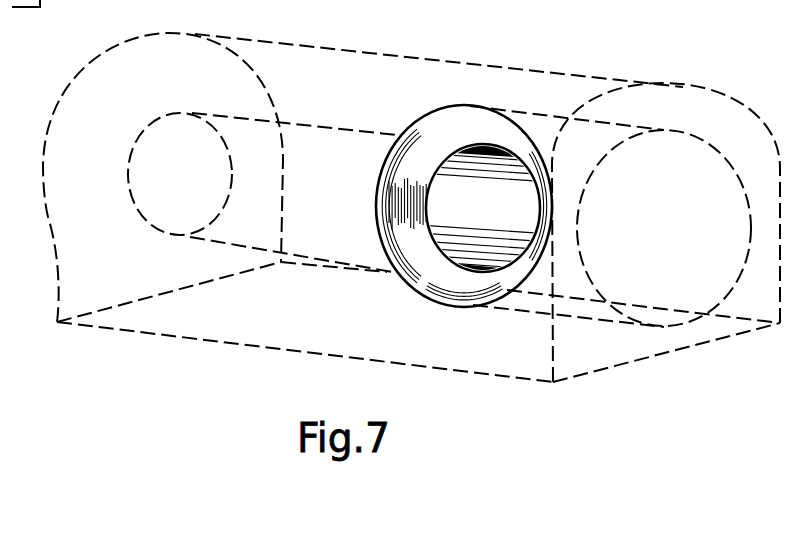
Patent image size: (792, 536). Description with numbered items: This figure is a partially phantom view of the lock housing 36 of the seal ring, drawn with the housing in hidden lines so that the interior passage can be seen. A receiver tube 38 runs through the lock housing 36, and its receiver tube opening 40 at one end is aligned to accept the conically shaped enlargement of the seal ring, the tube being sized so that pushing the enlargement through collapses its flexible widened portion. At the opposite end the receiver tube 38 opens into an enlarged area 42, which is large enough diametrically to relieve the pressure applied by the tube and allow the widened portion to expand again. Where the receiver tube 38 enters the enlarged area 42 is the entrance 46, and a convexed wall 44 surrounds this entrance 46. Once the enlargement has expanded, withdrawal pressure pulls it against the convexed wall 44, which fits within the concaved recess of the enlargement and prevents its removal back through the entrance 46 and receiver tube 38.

The lock housing 36 is at (275, 52).
The receiver tube 38 is at (238, 220).
The receiver tube opening 40 is at (170, 143).
The enlarged area 42 is at (690, 157).
The convexed wall 44 is at (417, 263).
The entrance 46 is at (463, 250).